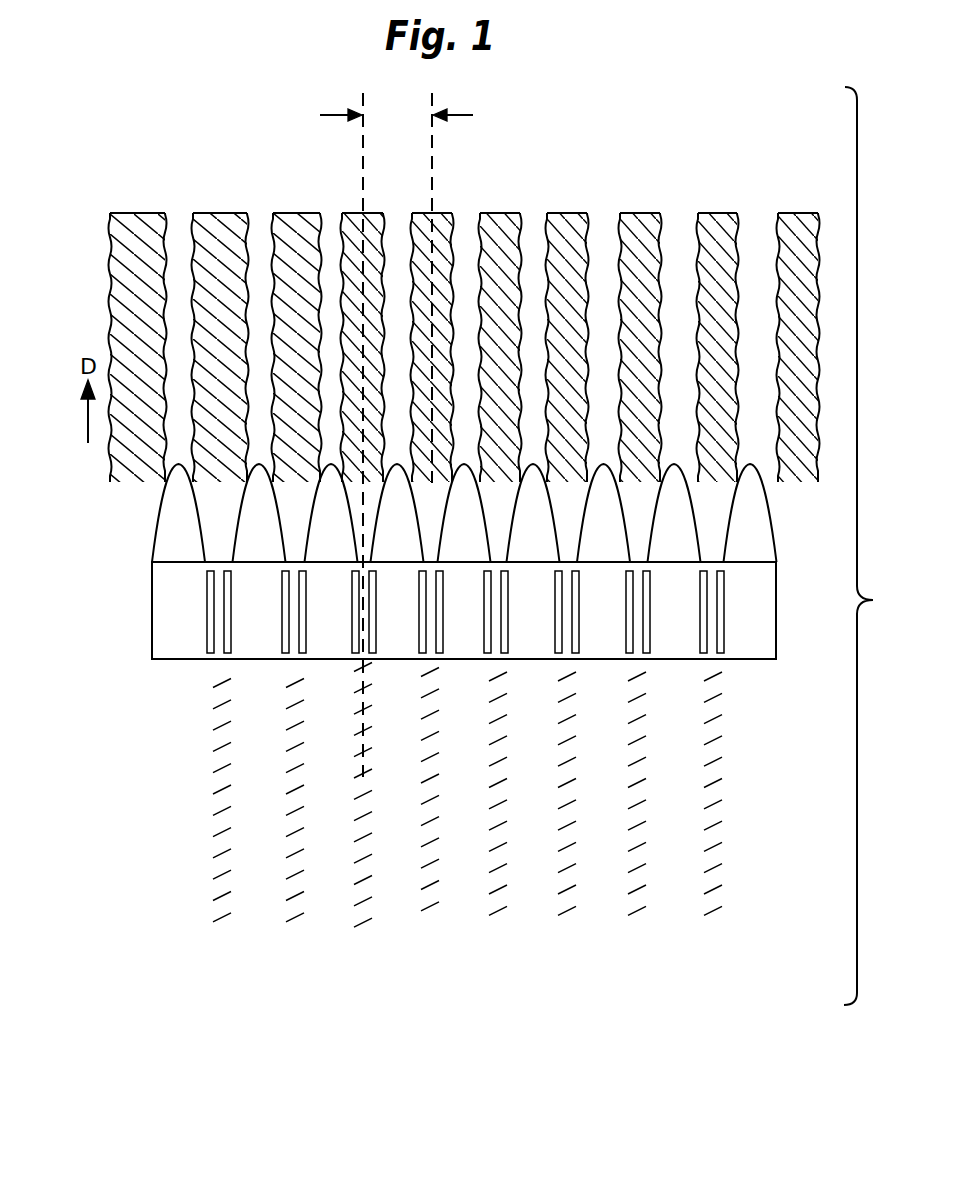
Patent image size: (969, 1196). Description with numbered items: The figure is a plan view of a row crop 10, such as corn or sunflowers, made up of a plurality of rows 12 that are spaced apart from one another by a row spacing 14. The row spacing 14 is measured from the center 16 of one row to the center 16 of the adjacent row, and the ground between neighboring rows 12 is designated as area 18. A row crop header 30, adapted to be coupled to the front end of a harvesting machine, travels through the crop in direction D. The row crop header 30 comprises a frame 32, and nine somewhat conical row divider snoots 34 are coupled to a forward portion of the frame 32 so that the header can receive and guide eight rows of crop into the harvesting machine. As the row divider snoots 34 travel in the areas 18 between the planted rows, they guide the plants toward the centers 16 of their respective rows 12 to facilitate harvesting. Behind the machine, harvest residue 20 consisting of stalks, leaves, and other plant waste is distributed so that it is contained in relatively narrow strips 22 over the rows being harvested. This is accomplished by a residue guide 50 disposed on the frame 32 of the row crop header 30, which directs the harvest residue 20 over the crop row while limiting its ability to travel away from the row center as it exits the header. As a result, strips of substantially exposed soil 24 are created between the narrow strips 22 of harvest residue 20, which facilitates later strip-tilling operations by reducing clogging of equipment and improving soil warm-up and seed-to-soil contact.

The row crop 10 is at (605, 135).
The rows 12 is at (813, 213).
The row spacing 14 is at (396, 116).
The center 16 is at (357, 148).
The area 18 is at (332, 215).
The harvest residue 20 is at (170, 781).
The narrow strips 22 is at (438, 918).
The exposed soil strips 24 is at (542, 917).
The row crop header 30 is at (142, 569).
The frame 32 is at (168, 650).
The row divider snoots 34 is at (761, 549).
The residue guide 50 is at (222, 619).